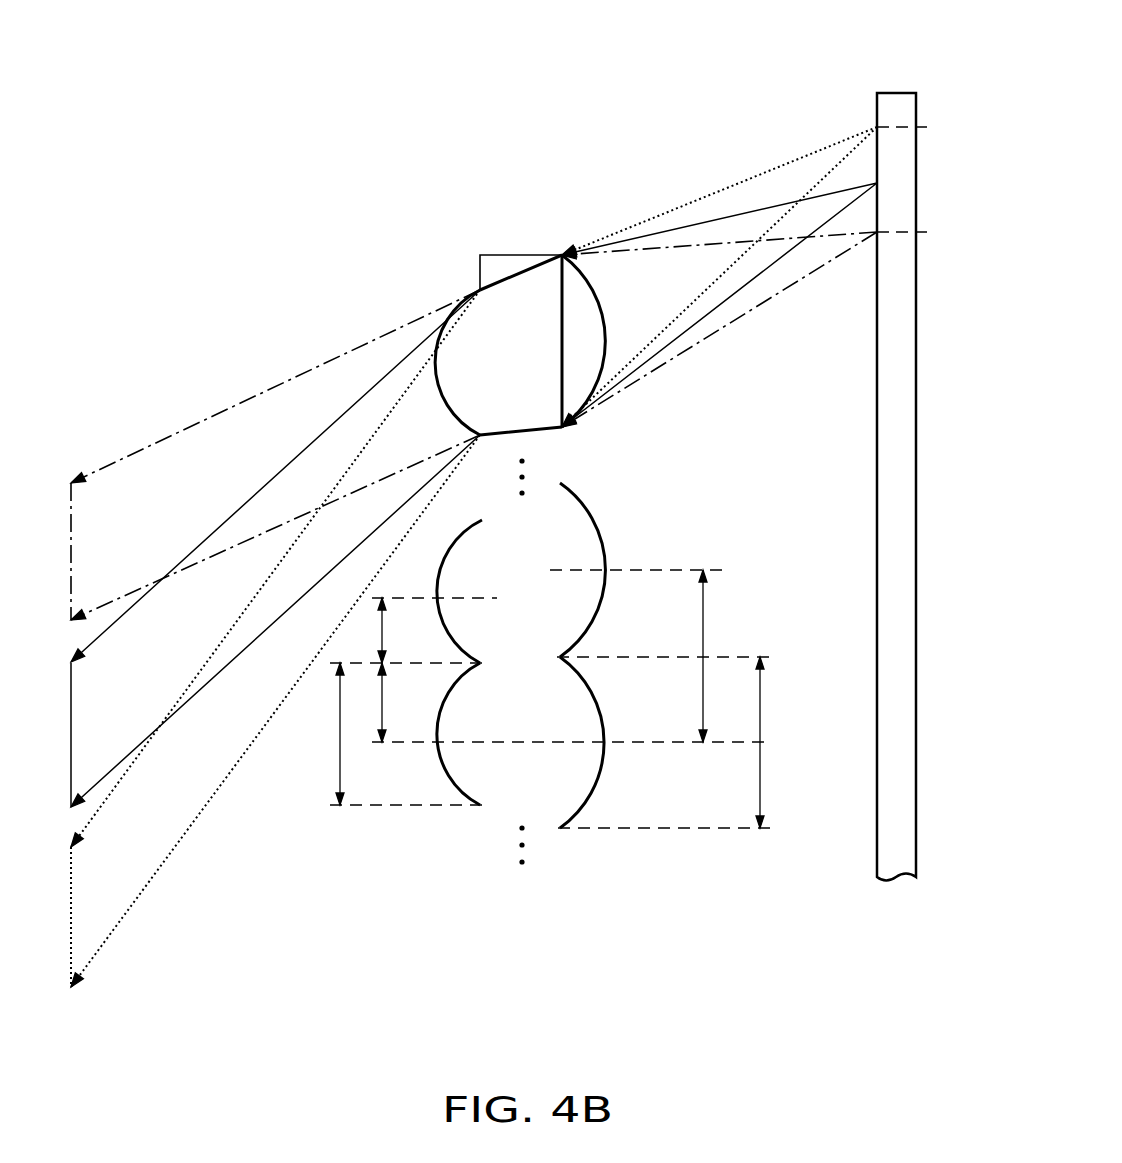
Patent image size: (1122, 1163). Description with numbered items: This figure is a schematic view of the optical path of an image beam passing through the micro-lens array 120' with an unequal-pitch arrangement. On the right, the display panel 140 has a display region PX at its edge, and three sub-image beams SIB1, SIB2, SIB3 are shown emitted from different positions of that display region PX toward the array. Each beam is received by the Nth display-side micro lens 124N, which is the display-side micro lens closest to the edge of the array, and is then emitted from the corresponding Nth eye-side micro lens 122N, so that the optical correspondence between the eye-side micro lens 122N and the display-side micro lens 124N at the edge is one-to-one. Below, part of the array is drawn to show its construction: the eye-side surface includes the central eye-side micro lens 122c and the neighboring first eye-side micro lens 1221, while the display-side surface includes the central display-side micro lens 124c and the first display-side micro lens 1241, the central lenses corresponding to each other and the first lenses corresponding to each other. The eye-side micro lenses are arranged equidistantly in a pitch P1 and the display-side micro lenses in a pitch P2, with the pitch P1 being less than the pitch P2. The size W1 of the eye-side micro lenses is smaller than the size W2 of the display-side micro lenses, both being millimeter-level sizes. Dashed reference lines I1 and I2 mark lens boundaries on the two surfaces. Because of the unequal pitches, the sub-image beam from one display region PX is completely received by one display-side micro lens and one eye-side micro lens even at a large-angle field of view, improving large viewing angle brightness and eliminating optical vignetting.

The display panel 140 is at (895, 103).
The display region PX is at (935, 127).
The first sub-image beam SIB1 is at (712, 193).
The second sub-image beam SIB2 is at (830, 195).
The third sub-image beam SIB3 is at (762, 305).
The micro-lens array 120' is at (531, 540).
The Nth eye-side micro lens 122N is at (455, 343).
The Nth display-side micro lens 124N is at (577, 288).
The first eye-side micro lens 1221 is at (447, 605).
The first display-side micro lens 1241 is at (582, 522).
The central eye-side micro lens 122c is at (453, 768).
The central display-side micro lens 124c is at (588, 783).
The first interface I1 is at (402, 598).
The second interface I2 is at (628, 572).
The pitch of eye-side micro lenses P1 is at (369, 702).
The pitch of display-side micro lenses P2 is at (719, 656).
The size of eye-side micro lenses W1 is at (324, 734).
The size of display-side micro lenses W2 is at (778, 742).